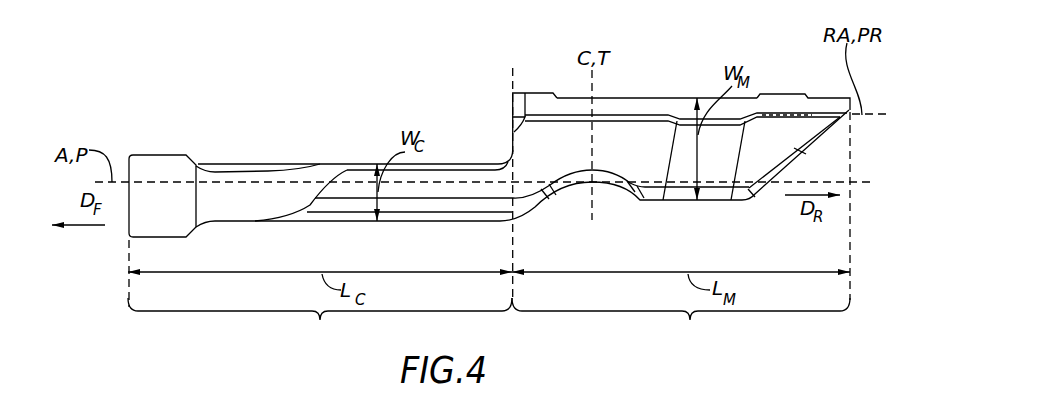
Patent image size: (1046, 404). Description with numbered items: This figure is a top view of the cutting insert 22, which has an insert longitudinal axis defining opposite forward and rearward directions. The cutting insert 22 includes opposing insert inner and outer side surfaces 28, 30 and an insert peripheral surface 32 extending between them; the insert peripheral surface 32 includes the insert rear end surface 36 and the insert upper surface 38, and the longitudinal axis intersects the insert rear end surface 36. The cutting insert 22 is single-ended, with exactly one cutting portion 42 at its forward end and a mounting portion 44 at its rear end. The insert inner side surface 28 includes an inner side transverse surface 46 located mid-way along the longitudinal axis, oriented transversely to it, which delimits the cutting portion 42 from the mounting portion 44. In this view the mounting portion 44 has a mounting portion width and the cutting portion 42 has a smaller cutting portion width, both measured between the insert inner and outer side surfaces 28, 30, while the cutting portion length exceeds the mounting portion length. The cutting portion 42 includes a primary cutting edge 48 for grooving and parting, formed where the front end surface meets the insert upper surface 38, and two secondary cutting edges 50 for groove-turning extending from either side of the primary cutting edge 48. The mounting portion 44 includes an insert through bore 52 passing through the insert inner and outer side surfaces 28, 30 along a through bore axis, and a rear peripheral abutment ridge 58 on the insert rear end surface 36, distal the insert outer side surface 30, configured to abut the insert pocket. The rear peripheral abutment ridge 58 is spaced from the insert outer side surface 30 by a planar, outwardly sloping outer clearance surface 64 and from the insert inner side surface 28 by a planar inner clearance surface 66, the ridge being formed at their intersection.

The cutting insert 22 is at (778, 28).
The insert inner side surface 28 is at (628, 97).
The insert outer side surface 30 is at (407, 222).
The insert peripheral surface 32 is at (316, 177).
The insert rear end surface 36 is at (802, 153).
The insert upper surface 38 is at (652, 135).
The cutting portion 42 is at (320, 327).
The mounting portion 44 is at (562, 177).
The inner side transverse surface 46 is at (512, 117).
The primary cutting edge 48 is at (128, 198).
The secondary cutting edges 50 is at (148, 155).
The insert through bore 52 is at (614, 203).
The rear peripheral abutment ridge 58 is at (798, 115).
The outer clearance surface 64 is at (757, 150).
The inner clearance surface 66 is at (777, 107).